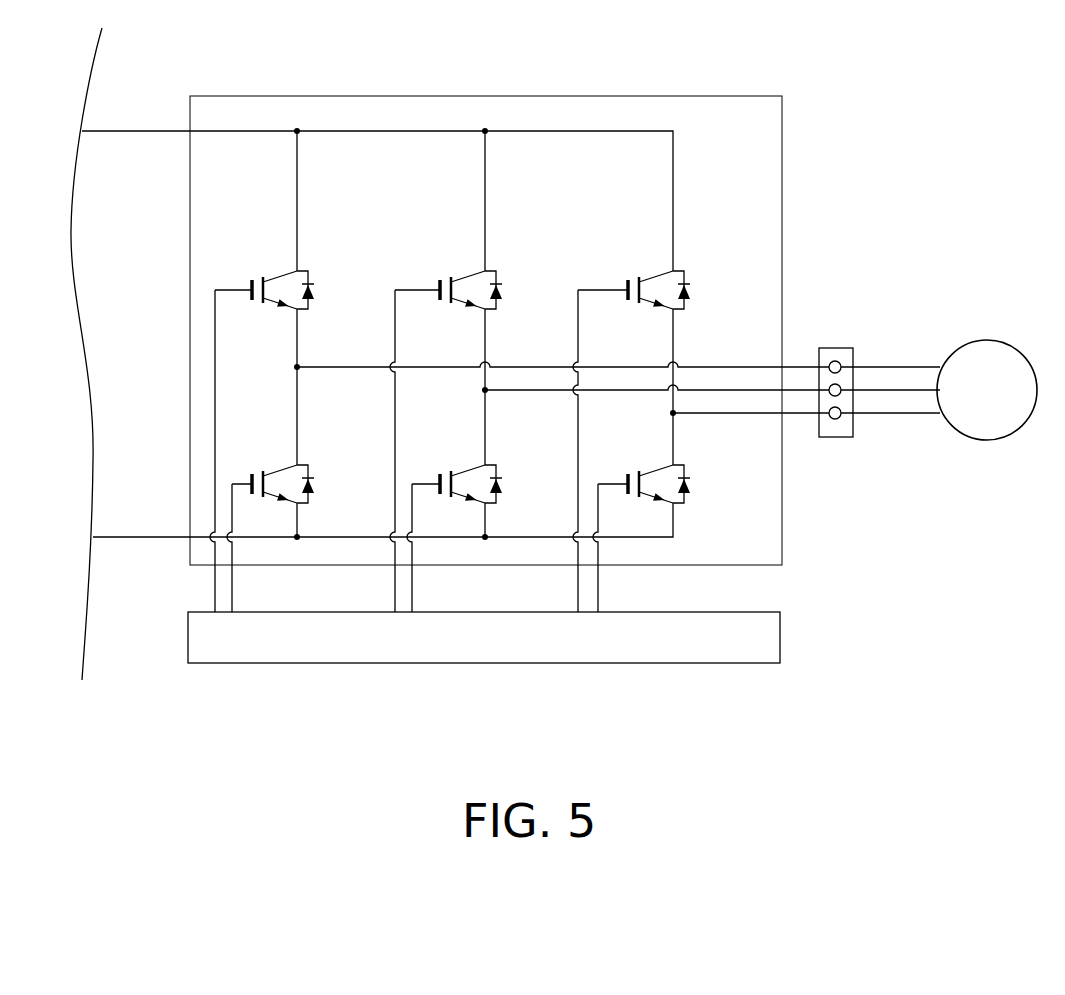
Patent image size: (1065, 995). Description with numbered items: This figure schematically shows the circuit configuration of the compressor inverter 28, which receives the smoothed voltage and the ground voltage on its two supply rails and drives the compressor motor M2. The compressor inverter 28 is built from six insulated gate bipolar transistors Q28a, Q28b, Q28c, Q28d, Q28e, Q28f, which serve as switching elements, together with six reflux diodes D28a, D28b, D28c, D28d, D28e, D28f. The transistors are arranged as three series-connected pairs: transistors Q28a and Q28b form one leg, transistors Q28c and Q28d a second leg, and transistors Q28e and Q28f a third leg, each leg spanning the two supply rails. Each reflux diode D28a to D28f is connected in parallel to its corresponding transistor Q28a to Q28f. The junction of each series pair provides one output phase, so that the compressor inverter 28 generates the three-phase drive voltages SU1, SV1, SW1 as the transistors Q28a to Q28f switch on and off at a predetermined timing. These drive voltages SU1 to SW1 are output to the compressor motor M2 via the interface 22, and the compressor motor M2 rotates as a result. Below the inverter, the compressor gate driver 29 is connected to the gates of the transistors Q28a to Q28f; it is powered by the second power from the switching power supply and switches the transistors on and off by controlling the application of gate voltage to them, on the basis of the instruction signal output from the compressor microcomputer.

The compressor inverter 28 is at (618, 95).
The compressor gate driver 29 is at (697, 613).
The interface 22 is at (835, 352).
The compressor motor M2 is at (993, 352).
The insulated gate bipolar transistor Q28a is at (278, 278).
The insulated gate bipolar transistor Q28b is at (273, 495).
The insulated gate bipolar transistor Q28c is at (472, 276).
The insulated gate bipolar transistor Q28d is at (460, 495).
The insulated gate bipolar transistor Q28e is at (663, 286).
The insulated gate bipolar transistor Q28f is at (656, 486).
The reflux diode D28a is at (308, 278).
The reflux diode D28b is at (309, 472).
The reflux diode D28c is at (495, 280).
The reflux diode D28d is at (497, 472).
The reflux diode D28e is at (687, 283).
The reflux diode D28f is at (693, 482).
The drive voltage SU1 is at (618, 356).
The drive voltage SV1 is at (712, 379).
The drive voltage SW1 is at (806, 402).